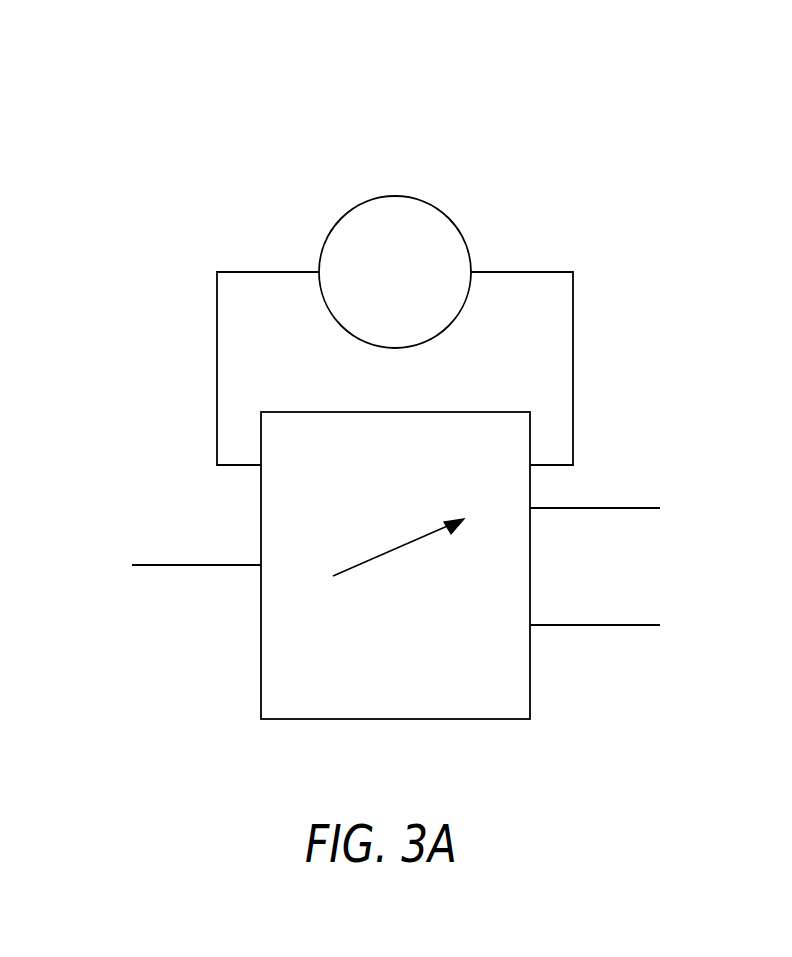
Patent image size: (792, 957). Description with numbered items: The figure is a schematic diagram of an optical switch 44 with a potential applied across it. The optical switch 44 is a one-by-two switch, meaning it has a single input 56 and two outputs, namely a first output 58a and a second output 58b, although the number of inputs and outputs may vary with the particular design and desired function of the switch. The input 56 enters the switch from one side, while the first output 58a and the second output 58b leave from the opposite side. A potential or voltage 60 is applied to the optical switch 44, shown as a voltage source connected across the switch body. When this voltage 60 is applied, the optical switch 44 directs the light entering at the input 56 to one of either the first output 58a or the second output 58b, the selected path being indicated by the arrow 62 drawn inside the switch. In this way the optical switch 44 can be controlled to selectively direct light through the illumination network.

The optical switch 44 is at (539, 137).
The voltage 60 is at (393, 196).
The input 56 is at (196, 567).
The first output 58a is at (595, 507).
The second output 58b is at (595, 623).
The arrow 62 is at (399, 548).